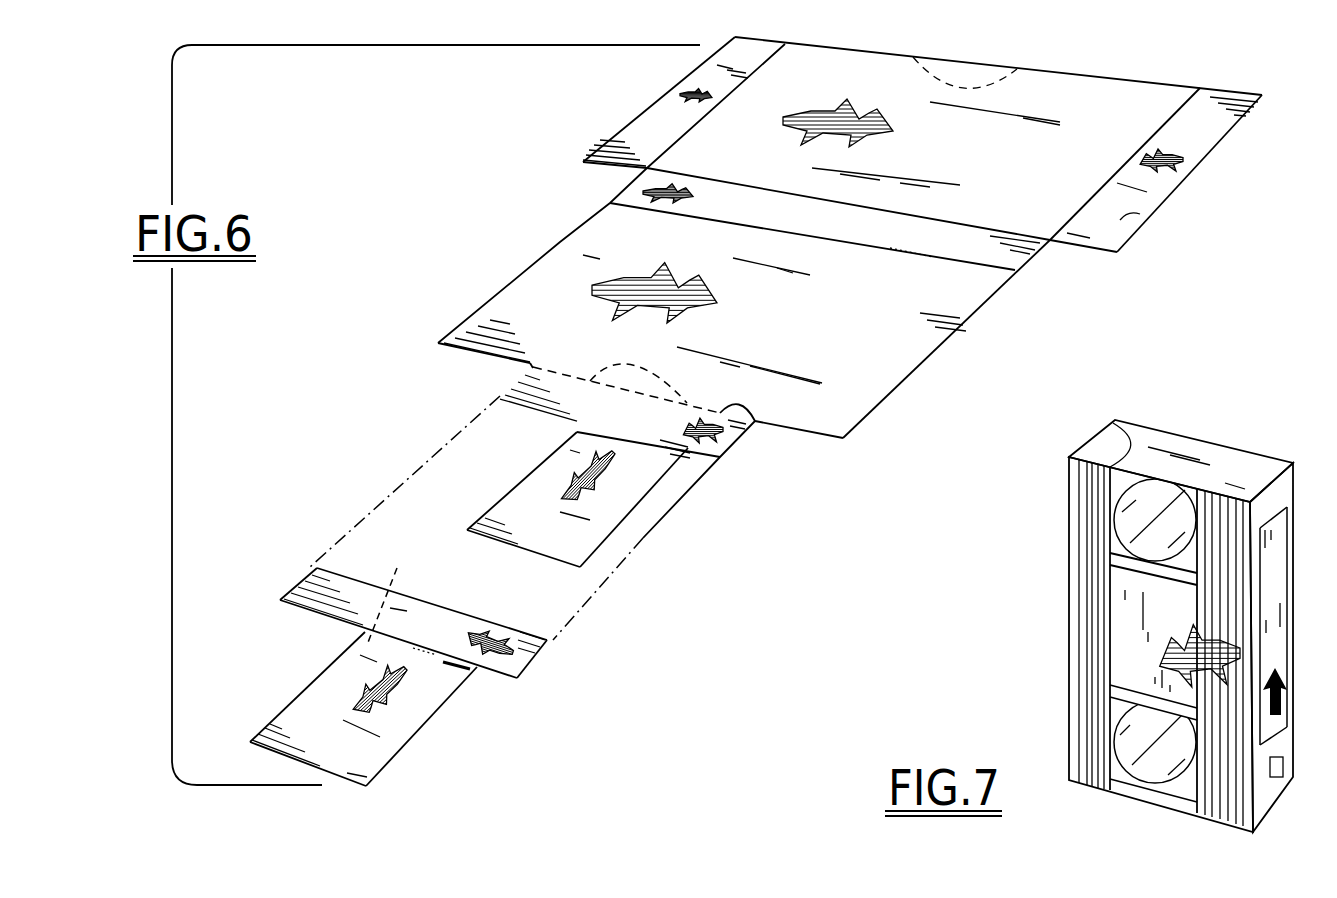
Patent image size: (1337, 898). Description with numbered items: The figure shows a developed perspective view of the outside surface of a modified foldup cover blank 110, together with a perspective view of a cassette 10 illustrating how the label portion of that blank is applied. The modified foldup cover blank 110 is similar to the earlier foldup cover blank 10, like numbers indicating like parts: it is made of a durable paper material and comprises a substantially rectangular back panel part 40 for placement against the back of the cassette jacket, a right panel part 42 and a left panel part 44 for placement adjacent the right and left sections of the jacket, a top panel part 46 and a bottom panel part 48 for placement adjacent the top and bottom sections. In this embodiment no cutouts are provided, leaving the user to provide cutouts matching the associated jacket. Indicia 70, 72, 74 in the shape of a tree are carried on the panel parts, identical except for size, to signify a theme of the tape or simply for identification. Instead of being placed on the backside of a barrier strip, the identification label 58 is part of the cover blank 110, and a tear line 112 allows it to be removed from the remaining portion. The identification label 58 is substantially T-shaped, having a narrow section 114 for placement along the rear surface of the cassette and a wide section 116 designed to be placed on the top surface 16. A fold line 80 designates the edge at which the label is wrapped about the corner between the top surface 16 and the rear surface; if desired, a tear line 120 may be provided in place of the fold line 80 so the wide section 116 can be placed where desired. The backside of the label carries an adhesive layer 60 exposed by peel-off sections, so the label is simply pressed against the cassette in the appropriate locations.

In FIG. 7, the foldup cover blank 10 is at (1248, 429).
In FIG. 7, the top surface 16 is at (1223, 812).
In FIG. 6, the back panel part 40 is at (628, 198).
In FIG. 6, the right panel part 42 is at (1125, 220).
In FIG. 6, the left panel part 44 is at (703, 72).
In FIG. 6, the top panel part 46 is at (868, 383).
In FIG. 6, the bottom panel part 48 is at (1065, 95).
In FIG. 6, the identification label 58 is at (413, 720).
In FIG. 7, the identification label 58 is at (1273, 645).
In FIG. 6, the adhesive layer 60 is at (665, 277).
In FIG. 6, the indicia 70 is at (672, 185).
In FIG. 6, the indicia 72 is at (817, 108).
In FIG. 6, the indicia 74 is at (493, 640).
In FIG. 6, the fold line 80 is at (1145, 146).
In FIG. 6, the modified foldup cover blank 110 is at (845, 462).
In FIG. 6, the tear line 112 is at (480, 586).
In FIG. 6, the narrow section 114 is at (528, 652).
In FIG. 7, the narrow section 114 is at (1275, 565).
In FIG. 6, the wide section 116 is at (376, 757).
In FIG. 7, the wide section 116 is at (1127, 657).
In FIG. 6, the tear line 120 is at (505, 698).